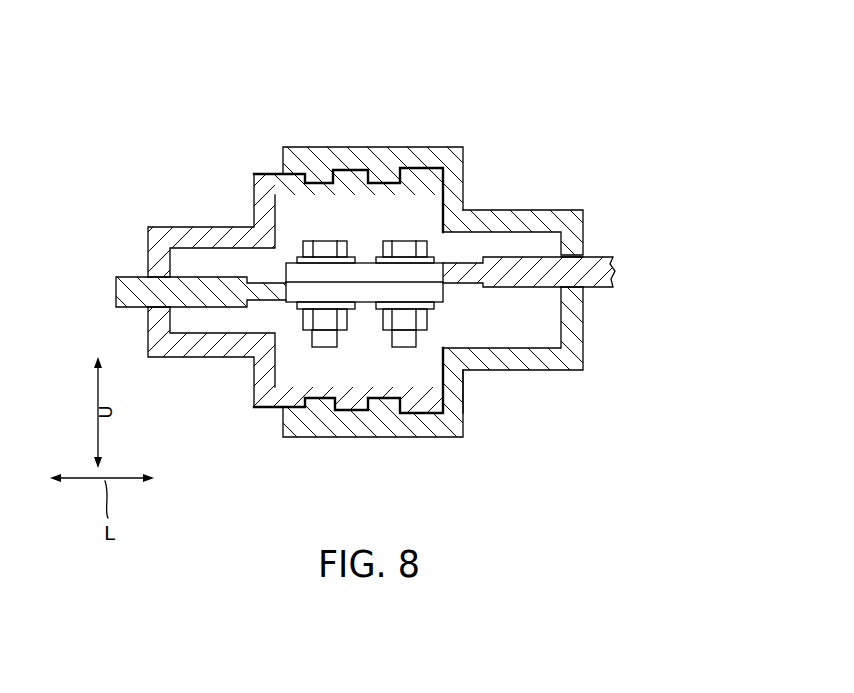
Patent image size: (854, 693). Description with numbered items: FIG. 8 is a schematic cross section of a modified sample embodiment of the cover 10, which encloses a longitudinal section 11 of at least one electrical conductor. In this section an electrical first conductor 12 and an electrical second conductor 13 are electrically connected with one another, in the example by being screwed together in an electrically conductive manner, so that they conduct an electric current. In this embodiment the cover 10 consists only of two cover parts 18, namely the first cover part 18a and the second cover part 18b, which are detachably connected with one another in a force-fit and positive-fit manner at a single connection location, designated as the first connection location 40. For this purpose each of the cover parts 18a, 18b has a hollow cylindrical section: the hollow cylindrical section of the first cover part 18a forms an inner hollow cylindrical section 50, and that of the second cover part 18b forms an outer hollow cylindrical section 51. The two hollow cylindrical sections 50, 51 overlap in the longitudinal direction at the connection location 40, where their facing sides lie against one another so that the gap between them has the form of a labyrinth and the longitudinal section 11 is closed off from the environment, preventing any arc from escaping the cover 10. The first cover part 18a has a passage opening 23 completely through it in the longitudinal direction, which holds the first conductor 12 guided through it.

The cover 10 is at (369, 283).
The longitudinal section 11 is at (361, 372).
The first conductor 12 is at (132, 291).
The second conductor 13 is at (598, 277).
The cover part 18 is at (360, 288).
The first cover part 18a is at (170, 226).
The second cover part 18b is at (531, 226).
The passage opening 23 is at (148, 275).
The first connection location 40 is at (358, 250).
The inner hollow cylindrical section 50 is at (361, 184).
The outer hollow cylindrical section 51 is at (343, 152).